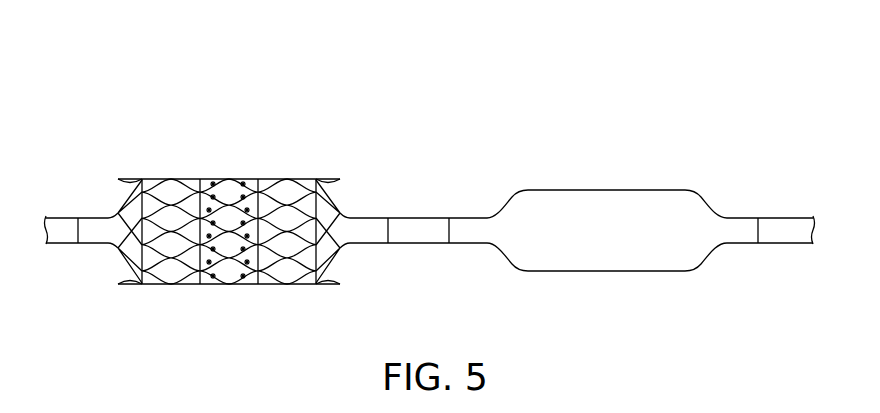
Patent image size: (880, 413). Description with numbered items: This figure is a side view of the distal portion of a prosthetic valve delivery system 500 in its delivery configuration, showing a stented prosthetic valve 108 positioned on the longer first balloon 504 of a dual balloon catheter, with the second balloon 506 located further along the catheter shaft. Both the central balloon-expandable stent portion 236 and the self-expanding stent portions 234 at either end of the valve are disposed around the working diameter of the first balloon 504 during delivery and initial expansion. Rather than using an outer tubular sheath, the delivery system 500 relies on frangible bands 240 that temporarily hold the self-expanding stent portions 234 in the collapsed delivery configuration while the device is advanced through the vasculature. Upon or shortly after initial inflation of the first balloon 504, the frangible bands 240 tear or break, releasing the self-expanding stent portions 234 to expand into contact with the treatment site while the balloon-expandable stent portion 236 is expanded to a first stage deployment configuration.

The stented prosthetic valve 108 is at (218, 120).
The self-expanding stent portions 234 is at (165, 289).
The balloon-expandable stent portion 236 is at (230, 289).
The frangible bands 240 is at (145, 178).
The prosthetic valve delivery system 500 is at (472, 86).
The first balloon 504 is at (346, 199).
The second balloon 506 is at (592, 190).